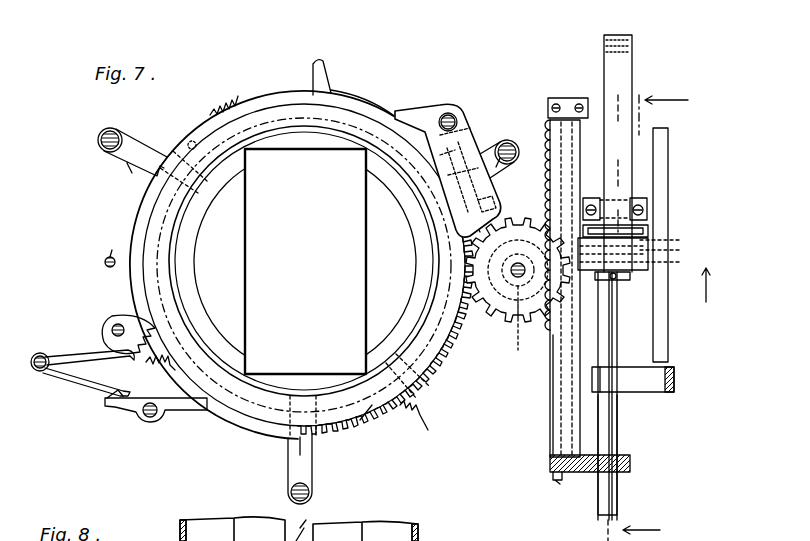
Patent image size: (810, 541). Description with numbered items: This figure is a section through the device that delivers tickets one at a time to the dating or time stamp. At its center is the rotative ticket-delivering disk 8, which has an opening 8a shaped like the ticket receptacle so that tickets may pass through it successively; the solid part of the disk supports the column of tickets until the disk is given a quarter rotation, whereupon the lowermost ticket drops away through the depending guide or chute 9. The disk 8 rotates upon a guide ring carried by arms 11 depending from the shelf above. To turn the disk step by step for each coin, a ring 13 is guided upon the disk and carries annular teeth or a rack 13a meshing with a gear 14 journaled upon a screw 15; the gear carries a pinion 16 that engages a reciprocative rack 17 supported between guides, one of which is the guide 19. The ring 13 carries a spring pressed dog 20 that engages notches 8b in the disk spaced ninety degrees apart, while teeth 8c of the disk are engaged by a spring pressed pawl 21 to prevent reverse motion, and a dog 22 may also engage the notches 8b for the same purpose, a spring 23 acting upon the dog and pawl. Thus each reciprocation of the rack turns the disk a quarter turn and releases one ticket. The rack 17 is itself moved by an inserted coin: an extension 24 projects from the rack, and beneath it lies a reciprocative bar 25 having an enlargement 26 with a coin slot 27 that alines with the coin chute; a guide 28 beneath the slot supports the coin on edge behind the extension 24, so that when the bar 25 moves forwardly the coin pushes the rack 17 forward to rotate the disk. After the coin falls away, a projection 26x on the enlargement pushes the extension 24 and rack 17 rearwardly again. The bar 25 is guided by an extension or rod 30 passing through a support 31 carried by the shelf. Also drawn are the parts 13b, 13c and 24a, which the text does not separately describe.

The ticket-delivering disk 8 is at (370, 303).
The opening 8a is at (281, 362).
The notches 8b is at (170, 158).
The teeth 8c is at (142, 375).
The guide or chute 9 is at (663, 103).
The arms 11 is at (310, 465).
The ring 13 is at (268, 425).
The annular teeth or rack 13a is at (366, 428).
The stop tab 13b is at (326, 74).
The pin 13c is at (104, 247).
The gear 14 is at (494, 318).
The screw 15 is at (520, 262).
The pinion 16 is at (518, 291).
The reciprocative rack 17 is at (548, 134).
The guide 19 is at (560, 438).
The spring pressed dog 20 is at (422, 108).
The spring pressed pawl 21 is at (106, 335).
The dog 22 is at (177, 410).
The spring 23 is at (75, 376).
The extension 24 is at (629, 234).
The arm 24a is at (663, 348).
The reciprocative bar 25 is at (606, 66).
The enlargement 26 is at (648, 235).
The projection 26x is at (640, 278).
The coin slot 27 is at (668, 208).
The guide 28 is at (622, 396).
The extension or rod 30 is at (607, 428).
The support 31 is at (553, 472).